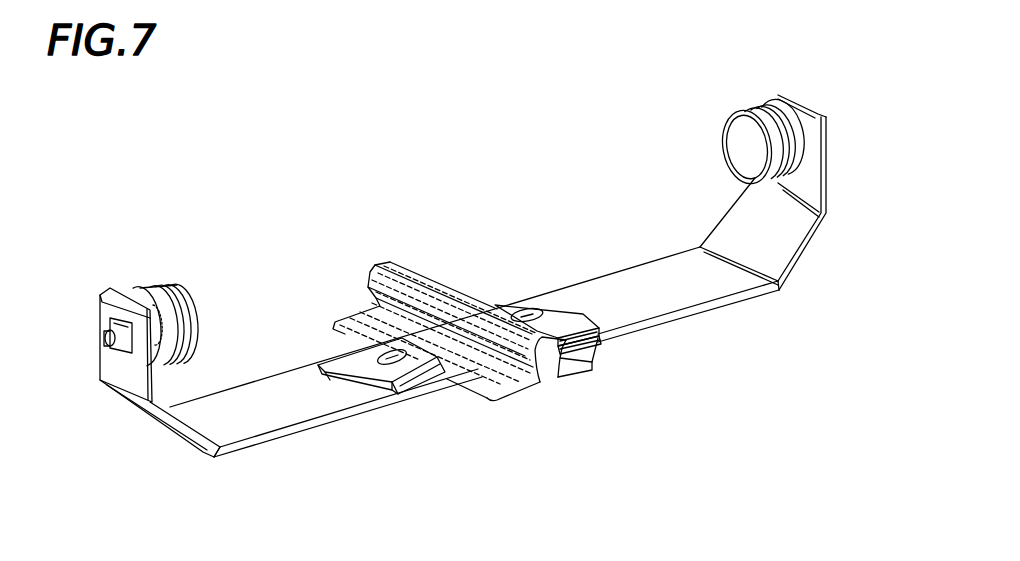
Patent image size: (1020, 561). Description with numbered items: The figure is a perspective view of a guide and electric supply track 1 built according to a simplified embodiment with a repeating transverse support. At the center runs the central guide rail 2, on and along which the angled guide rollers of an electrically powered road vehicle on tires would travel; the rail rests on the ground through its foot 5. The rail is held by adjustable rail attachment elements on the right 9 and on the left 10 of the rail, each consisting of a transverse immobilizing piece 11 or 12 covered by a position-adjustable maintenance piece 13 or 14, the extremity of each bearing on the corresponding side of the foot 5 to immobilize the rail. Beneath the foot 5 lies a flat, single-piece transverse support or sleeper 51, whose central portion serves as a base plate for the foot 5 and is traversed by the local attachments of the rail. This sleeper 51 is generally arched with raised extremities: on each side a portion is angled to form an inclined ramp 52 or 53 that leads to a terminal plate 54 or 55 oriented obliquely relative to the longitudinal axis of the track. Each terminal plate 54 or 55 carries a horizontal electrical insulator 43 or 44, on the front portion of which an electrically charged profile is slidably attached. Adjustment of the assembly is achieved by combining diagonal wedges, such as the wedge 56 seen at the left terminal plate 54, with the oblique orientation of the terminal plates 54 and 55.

The guide and electric supply track 1 is at (473, 163).
The central guide rail 2 is at (427, 282).
The foot 5 is at (546, 381).
The adjustable rail attachment element on the right 9 is at (318, 350).
The adjustable rail attachment element on the left 10 is at (502, 298).
The transverse immobilizing piece 11 is at (413, 394).
The transverse immobilizing piece 12 is at (598, 338).
The maintenance piece 13 is at (362, 355).
The maintenance piece 14 is at (556, 315).
The horizontal electrical insulator 43 is at (138, 266).
The horizontal electrical insulator 44 is at (748, 82).
The transverse support or sleeper 51 is at (306, 437).
The inclined ramp 52 is at (155, 417).
The inclined ramp 53 is at (783, 247).
The terminal plate 54 is at (122, 368).
The terminal plate 55 is at (803, 177).
The wedge 56 is at (110, 322).